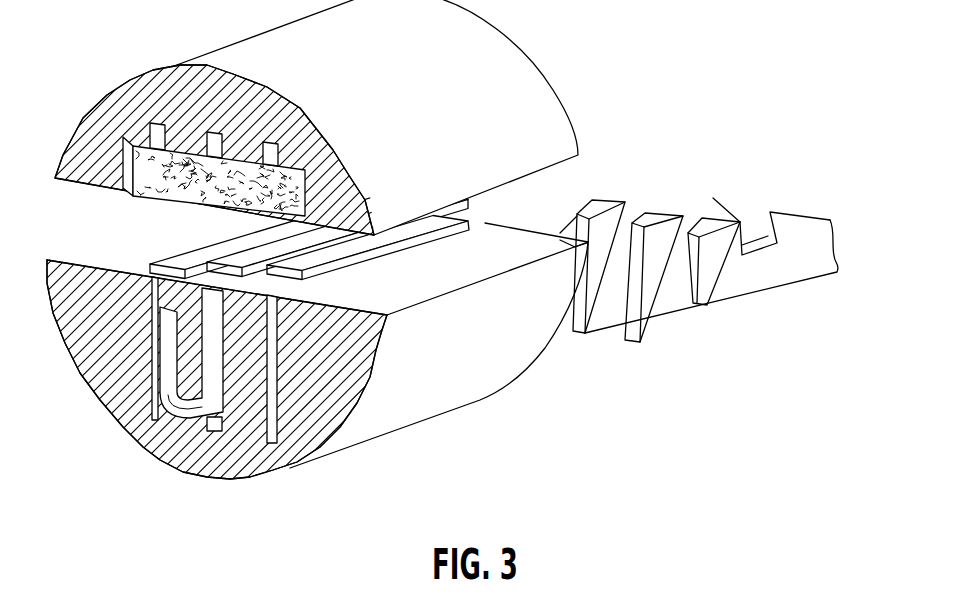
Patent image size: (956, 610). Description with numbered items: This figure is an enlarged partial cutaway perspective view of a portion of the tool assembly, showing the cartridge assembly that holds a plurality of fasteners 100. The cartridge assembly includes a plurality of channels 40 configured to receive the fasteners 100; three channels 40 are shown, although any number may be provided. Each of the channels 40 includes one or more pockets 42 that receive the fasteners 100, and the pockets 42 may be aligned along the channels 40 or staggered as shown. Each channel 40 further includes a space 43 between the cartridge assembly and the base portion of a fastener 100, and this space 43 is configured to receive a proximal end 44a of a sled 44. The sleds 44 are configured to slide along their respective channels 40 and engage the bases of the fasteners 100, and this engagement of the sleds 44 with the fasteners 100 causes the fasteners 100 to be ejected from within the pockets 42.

The channels 40 is at (287, 344).
The pockets 42 is at (330, 278).
The space 43 is at (222, 420).
The sled 44 is at (699, 281).
The proximal end 44a is at (643, 328).
The fasteners 100 is at (175, 440).